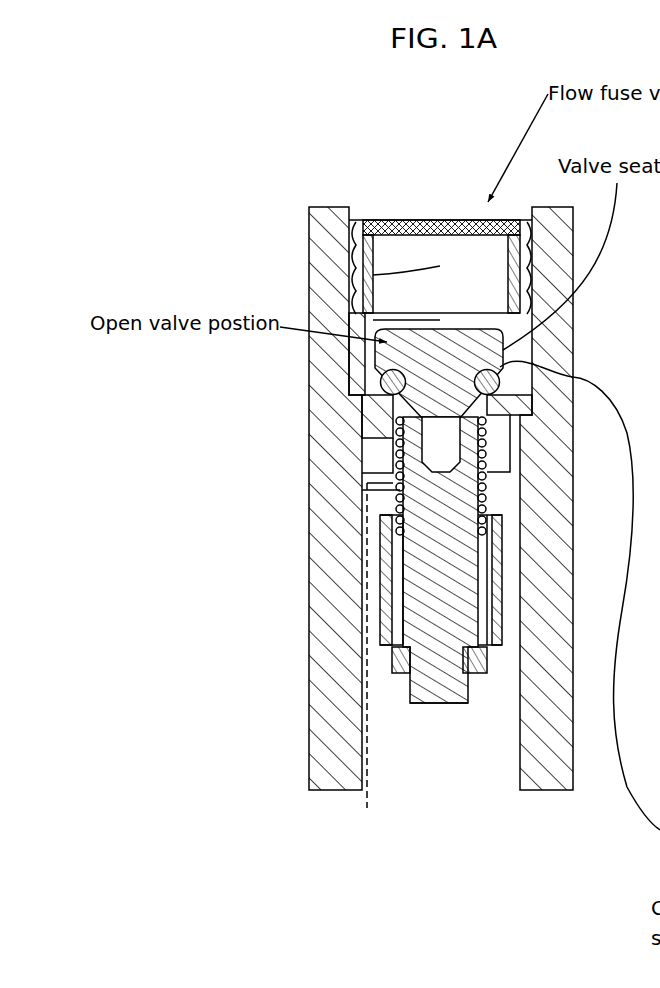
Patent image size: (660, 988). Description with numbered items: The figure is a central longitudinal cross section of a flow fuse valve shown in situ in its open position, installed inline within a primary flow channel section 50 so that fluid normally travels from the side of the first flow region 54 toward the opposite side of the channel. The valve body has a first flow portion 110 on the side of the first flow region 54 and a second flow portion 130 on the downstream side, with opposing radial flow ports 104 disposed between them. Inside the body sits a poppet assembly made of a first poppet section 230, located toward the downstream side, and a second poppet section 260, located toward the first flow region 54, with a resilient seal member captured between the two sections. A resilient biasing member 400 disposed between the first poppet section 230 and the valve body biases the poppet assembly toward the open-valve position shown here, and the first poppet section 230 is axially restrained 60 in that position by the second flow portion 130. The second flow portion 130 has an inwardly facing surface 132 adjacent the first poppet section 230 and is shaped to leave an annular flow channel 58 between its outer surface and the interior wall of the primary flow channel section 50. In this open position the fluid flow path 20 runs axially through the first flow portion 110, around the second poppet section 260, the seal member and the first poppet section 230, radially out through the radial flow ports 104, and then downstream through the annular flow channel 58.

The fluid flow path 20 is at (335, 206).
The second poppet section 260 is at (349, 277).
The first flow region 54 is at (477, 136).
The first poppet section 230 is at (409, 702).
The first flow portion 110 is at (372, 443).
The radial flow port 104 is at (497, 493).
The resilient biasing member 400 is at (393, 497).
The primary flow channel section 50 is at (308, 698).
The annular flow channel 58 is at (362, 537).
The second flow portion 130 is at (372, 612).
The inwardly facing surface 132 is at (388, 578).
The axial restraint 60 is at (480, 675).